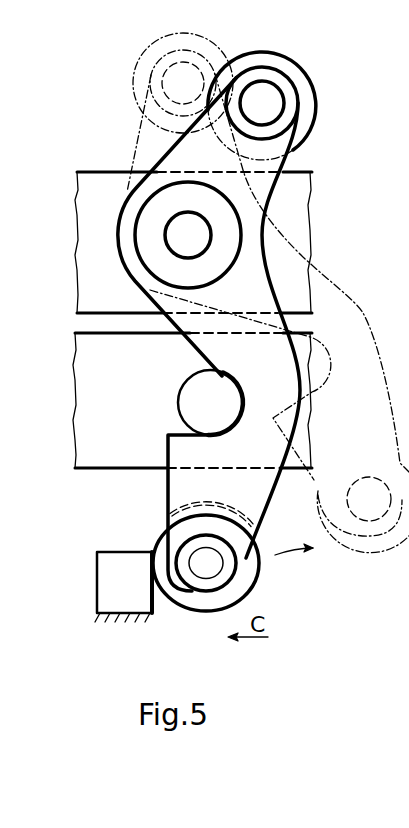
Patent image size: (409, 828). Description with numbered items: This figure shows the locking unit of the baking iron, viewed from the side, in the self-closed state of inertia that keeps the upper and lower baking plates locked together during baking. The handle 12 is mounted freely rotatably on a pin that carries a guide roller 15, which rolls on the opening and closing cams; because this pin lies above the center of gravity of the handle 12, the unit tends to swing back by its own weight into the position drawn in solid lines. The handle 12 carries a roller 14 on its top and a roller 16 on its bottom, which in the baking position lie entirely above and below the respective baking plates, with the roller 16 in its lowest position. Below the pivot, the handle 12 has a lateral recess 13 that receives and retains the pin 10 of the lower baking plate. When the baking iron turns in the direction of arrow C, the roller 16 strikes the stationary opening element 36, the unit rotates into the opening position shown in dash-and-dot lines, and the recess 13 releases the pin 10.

The pin 10 is at (203, 395).
The handle 12 is at (197, 326).
The lateral recess 13 is at (178, 433).
The roller 14 is at (302, 89).
The guide roller 15 is at (148, 208).
The roller 16 is at (243, 577).
The stationary opening element 36 is at (115, 580).